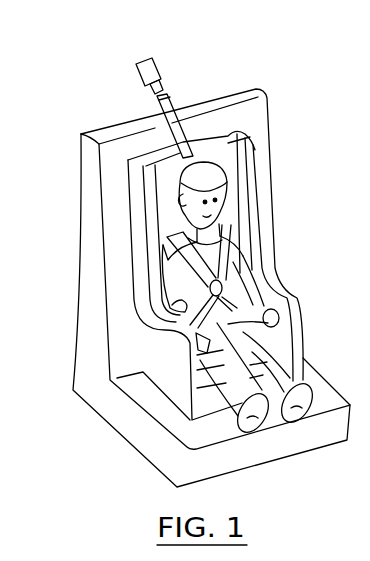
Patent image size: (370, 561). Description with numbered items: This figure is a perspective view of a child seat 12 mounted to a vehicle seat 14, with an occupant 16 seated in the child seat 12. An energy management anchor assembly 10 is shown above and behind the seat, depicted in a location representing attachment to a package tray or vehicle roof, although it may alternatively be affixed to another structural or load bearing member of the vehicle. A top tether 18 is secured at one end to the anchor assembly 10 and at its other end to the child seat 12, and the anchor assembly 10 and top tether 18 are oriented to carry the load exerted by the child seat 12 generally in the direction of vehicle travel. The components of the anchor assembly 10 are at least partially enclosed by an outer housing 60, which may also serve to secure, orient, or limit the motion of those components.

The energy management anchor assembly 10 is at (155, 63).
The child seat 12 is at (253, 157).
The vehicle seat 14 is at (117, 305).
The occupant 16 is at (226, 277).
The top tether 18 is at (202, 105).
The outer housing 60 is at (143, 62).